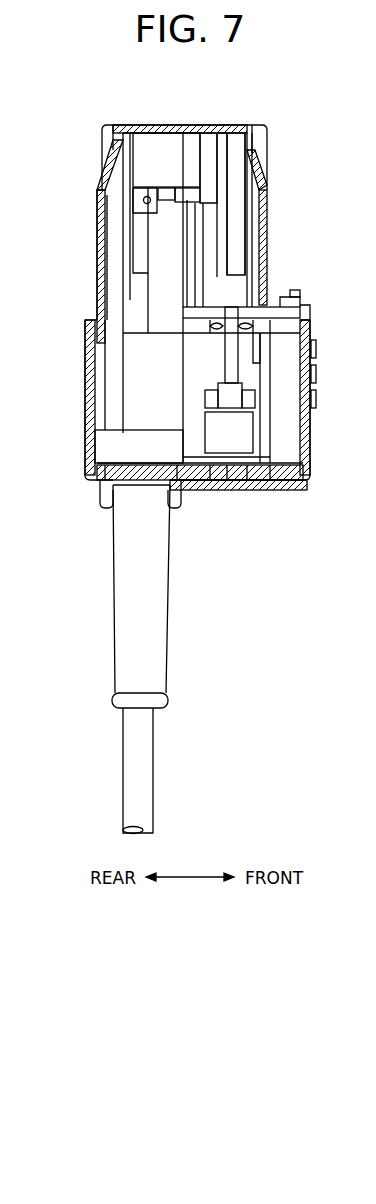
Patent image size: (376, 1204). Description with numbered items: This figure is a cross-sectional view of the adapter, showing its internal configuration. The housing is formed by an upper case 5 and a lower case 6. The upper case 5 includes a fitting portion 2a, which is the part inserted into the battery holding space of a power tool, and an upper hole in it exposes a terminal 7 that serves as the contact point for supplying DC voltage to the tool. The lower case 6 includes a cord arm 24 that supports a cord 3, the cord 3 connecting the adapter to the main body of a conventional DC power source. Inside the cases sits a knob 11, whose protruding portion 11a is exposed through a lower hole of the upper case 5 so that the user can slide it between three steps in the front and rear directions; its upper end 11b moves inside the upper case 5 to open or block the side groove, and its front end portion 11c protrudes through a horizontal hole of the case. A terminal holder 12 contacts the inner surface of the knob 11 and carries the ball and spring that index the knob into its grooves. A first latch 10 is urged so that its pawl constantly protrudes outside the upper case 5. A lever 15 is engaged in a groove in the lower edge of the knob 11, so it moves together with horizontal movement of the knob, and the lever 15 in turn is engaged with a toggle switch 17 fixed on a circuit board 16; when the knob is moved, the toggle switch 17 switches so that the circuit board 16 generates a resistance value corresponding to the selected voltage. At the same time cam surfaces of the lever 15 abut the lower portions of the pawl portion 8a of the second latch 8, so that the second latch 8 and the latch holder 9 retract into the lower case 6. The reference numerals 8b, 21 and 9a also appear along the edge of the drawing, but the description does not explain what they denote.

The fitting portion 2a is at (103, 143).
The upper case 5 is at (97, 213).
The terminal 7 is at (165, 145).
The knob 11 is at (157, 293).
The protruding portion 11a is at (200, 252).
The upper end 11b is at (222, 143).
The front end portion 11c is at (294, 293).
The terminal holder 12 is at (245, 217).
The first latch 10 is at (300, 298).
The lever 15 is at (313, 363).
The toggle switch 17 is at (255, 425).
The lower case 6 is at (92, 420).
The circuit board 16 is at (255, 490).
The cord arm 24 is at (167, 632).
The cord 3 is at (153, 786).
The lever portion 8b is at (357, 640).
The spring 21 is at (375, 678).
The second latch 8 is at (375, 714).
The pawl portion 8a is at (375, 758).
The latch holder 9 is at (375, 797).
The slider portion 9a is at (362, 882).